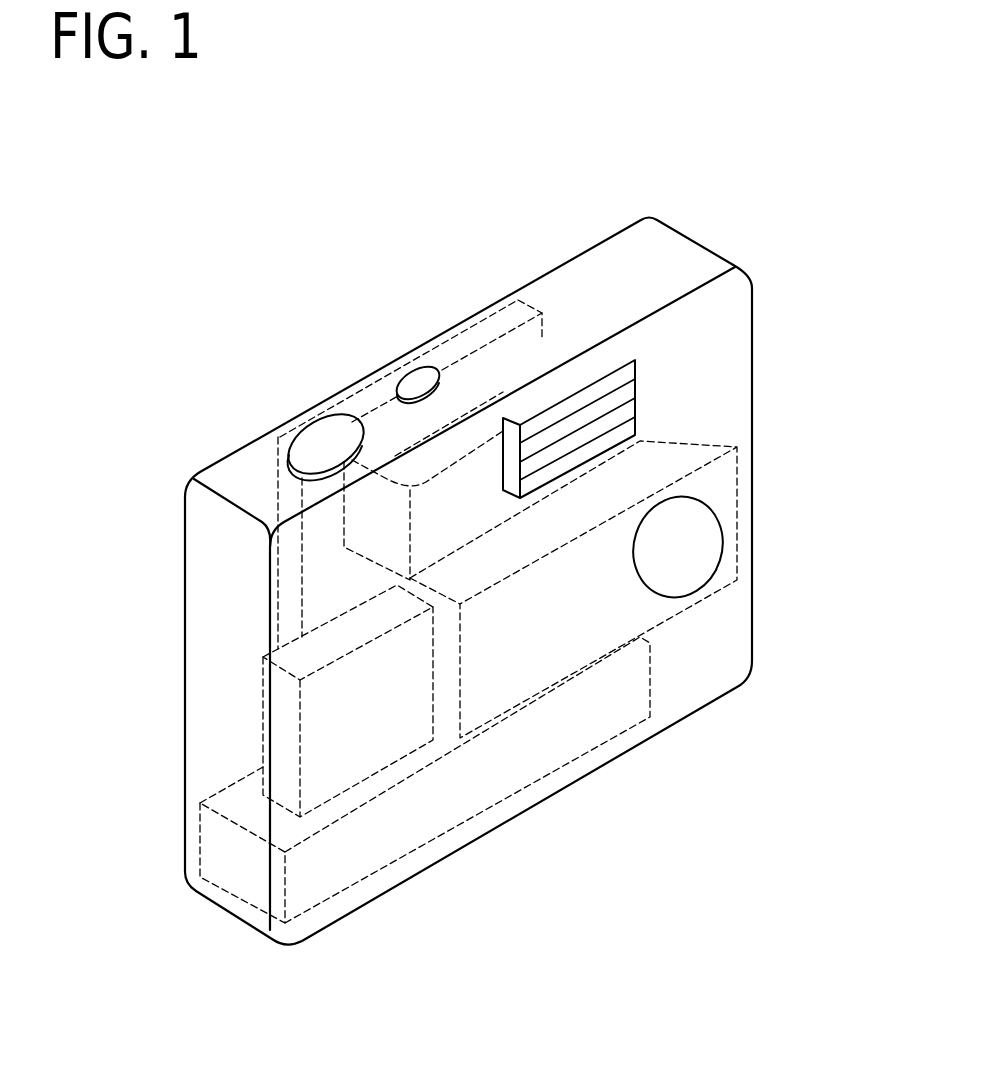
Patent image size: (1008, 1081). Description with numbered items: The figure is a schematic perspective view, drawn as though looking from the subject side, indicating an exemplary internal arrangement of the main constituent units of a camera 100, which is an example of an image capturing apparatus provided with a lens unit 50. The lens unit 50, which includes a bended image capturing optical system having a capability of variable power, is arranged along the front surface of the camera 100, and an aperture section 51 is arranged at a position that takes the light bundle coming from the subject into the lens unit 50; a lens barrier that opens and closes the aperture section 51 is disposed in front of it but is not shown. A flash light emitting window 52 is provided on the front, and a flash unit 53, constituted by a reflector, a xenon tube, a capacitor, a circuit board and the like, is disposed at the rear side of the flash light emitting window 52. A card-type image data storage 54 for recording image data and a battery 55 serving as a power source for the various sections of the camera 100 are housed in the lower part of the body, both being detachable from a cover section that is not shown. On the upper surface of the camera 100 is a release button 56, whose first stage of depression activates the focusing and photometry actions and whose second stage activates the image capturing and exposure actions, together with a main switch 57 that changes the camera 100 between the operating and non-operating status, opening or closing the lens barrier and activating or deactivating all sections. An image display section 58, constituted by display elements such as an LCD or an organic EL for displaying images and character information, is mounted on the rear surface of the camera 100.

The camera 100 is at (566, 180).
The lens unit 50 is at (570, 635).
The aperture section 51 is at (707, 527).
The flash light emitting window 52 is at (588, 400).
The flash unit 53 is at (563, 342).
The card-type image data storage 54 is at (380, 745).
The battery 55 is at (478, 782).
The release button 56 is at (322, 445).
The main switch 57 is at (413, 382).
The image display section 58 is at (467, 342).